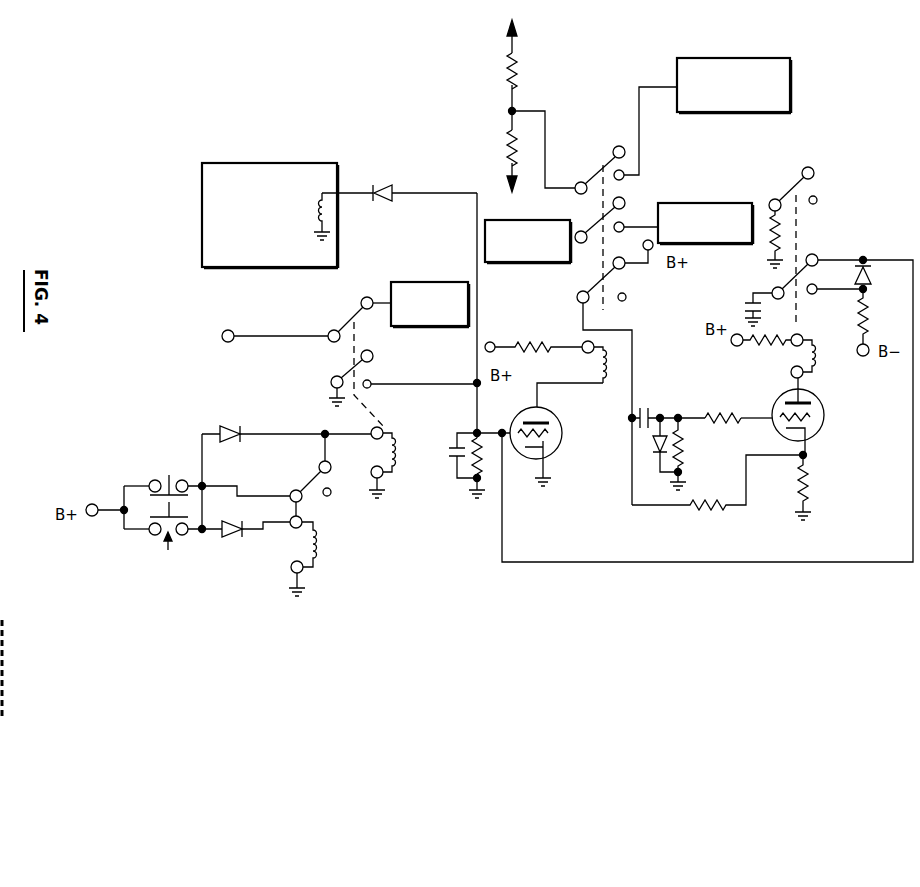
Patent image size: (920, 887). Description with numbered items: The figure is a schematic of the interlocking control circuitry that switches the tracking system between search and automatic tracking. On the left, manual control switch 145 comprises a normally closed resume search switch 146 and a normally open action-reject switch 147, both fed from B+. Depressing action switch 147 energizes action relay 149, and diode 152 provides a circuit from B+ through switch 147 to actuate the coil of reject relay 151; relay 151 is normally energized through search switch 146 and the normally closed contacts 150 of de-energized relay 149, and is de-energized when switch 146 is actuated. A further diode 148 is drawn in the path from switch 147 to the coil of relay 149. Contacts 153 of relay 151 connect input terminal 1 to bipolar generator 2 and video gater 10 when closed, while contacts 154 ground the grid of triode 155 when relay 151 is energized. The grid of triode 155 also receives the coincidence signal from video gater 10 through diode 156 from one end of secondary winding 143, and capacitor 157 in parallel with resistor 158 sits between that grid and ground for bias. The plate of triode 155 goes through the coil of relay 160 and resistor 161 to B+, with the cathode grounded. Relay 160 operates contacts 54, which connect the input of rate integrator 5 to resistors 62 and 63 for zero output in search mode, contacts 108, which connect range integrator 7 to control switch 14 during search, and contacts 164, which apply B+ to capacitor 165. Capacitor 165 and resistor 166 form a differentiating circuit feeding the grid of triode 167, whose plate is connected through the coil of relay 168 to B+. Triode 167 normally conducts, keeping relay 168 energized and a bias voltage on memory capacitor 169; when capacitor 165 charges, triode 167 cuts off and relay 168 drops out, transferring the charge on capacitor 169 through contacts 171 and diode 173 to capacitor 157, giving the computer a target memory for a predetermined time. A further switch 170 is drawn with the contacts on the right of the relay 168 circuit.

The input terminal 1 is at (222, 330).
The bipolar generator 2 is at (418, 287).
The rate integrator 5 is at (723, 60).
The range integrator 7 is at (702, 203).
The video gater 10 is at (278, 172).
The control switch 14 is at (522, 222).
The open contacts of relay 160 54 is at (610, 161).
The resistor 62 is at (519, 72).
The resistor 63 is at (507, 144).
The closed contacts of relay 160 108 is at (590, 232).
The secondary winding 143 is at (328, 215).
The manual control switch 145 is at (156, 548).
The resume search switch 146 is at (154, 478).
The action-reject switch 147 is at (157, 516).
The diode 148 is at (228, 540).
The action relay 149 is at (320, 545).
The normally closed contacts of relay 149 150 is at (332, 491).
The reject relay 151 is at (396, 455).
The diode 152 is at (229, 428).
The contacts of relay 151 153 is at (350, 322).
The contacts of relay 151 154 is at (373, 361).
The triode 155 is at (561, 448).
The diode 156 is at (388, 183).
The capacitor 157 is at (453, 455).
The resistor 158 is at (482, 458).
The relay 160 is at (604, 378).
The resistor 161 is at (532, 340).
The open contacts of relay 160 164 is at (627, 297).
The capacitor 165 is at (645, 410).
The resistor 166 is at (716, 410).
The triode 167 is at (814, 431).
The relay 168 is at (817, 360).
The memory capacitor 169 is at (760, 305).
The switch 170 is at (813, 178).
The contacts 171 is at (818, 272).
The diode 173 is at (868, 272).